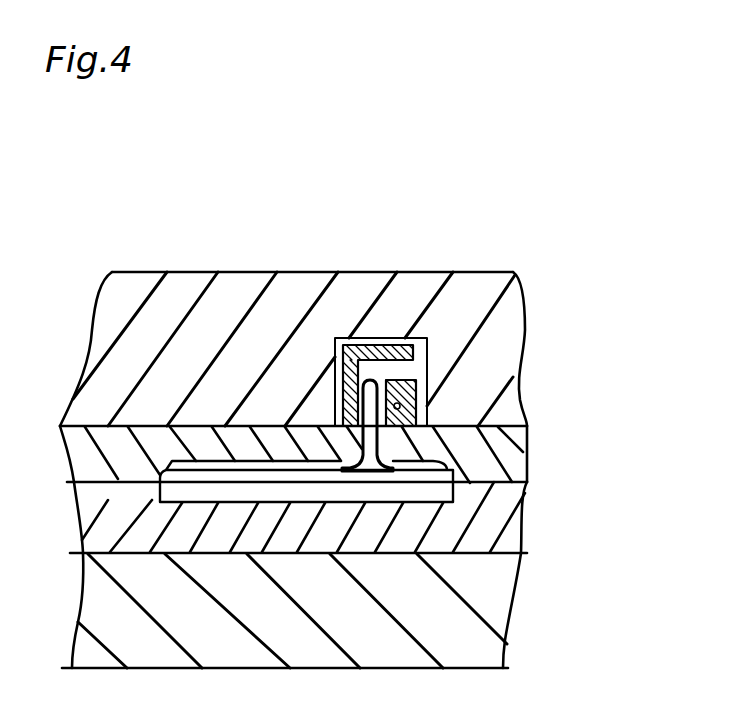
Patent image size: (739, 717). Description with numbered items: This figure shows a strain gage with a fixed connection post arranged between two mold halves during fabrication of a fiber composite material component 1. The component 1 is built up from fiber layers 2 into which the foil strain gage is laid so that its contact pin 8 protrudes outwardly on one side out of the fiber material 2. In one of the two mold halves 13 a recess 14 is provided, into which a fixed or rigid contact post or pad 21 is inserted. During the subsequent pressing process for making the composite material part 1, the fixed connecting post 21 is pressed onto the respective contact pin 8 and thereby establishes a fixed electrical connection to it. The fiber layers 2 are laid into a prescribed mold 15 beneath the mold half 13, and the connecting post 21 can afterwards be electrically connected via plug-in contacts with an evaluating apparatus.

The mold halves 13 is at (478, 287).
The recess 14 is at (418, 363).
The contact post or pad 21 is at (423, 403).
The fiber composite material component 1 is at (523, 442).
The contact pin 8 is at (373, 437).
The fiber layers 2 is at (493, 518).
The mold 15 is at (453, 617).